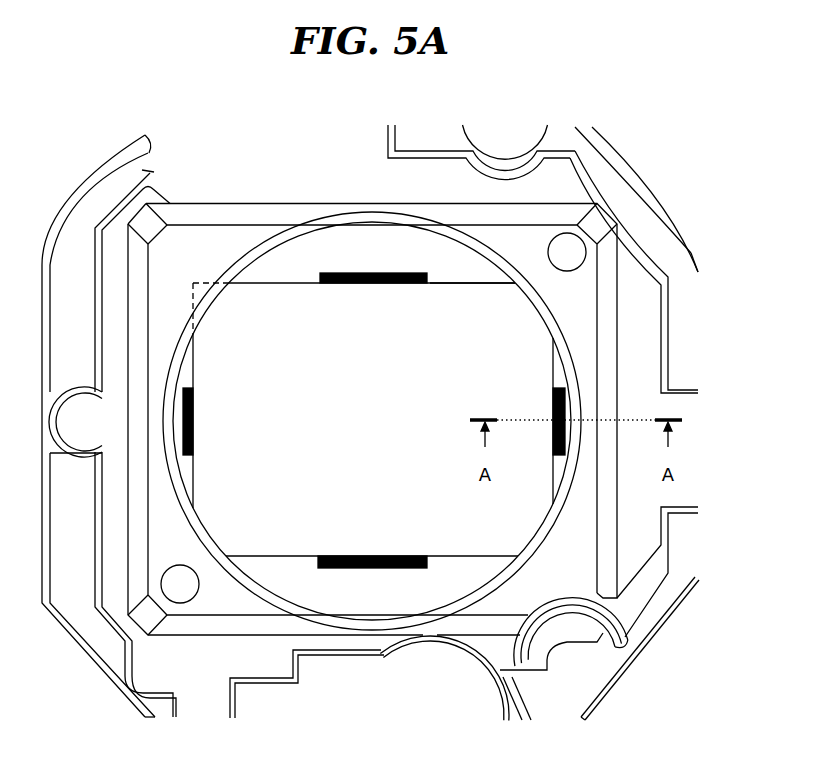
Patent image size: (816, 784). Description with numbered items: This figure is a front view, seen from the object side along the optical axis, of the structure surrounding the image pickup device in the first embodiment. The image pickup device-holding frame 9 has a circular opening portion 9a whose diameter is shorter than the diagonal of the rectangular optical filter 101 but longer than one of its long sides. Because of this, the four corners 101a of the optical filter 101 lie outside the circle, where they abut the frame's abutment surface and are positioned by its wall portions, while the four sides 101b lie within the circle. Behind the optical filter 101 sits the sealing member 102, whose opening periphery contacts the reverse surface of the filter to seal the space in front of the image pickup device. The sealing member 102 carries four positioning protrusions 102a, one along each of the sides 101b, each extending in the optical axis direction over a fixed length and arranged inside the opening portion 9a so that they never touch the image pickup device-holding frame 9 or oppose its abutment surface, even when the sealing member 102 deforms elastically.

The image pickup device-holding frame 9 is at (550, 585).
The opening portion 9a is at (560, 494).
The optical filter 101 is at (523, 335).
The corners 101a is at (193, 283).
The sides 101b is at (458, 283).
The sealing member 102 is at (300, 592).
The positioning protrusions 102a is at (317, 280).